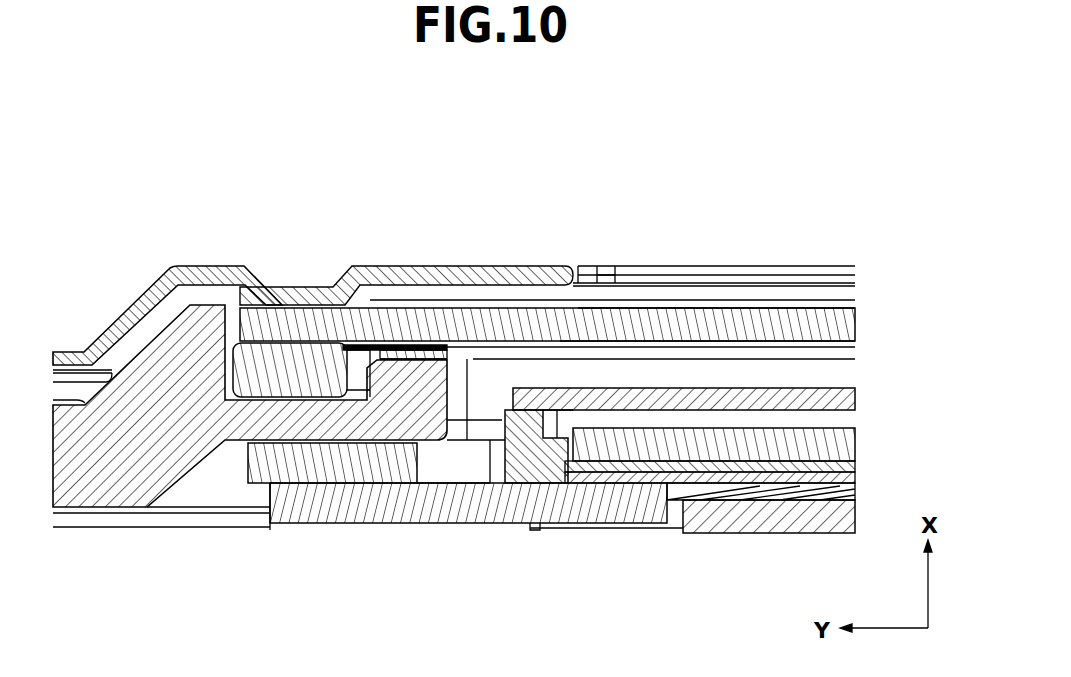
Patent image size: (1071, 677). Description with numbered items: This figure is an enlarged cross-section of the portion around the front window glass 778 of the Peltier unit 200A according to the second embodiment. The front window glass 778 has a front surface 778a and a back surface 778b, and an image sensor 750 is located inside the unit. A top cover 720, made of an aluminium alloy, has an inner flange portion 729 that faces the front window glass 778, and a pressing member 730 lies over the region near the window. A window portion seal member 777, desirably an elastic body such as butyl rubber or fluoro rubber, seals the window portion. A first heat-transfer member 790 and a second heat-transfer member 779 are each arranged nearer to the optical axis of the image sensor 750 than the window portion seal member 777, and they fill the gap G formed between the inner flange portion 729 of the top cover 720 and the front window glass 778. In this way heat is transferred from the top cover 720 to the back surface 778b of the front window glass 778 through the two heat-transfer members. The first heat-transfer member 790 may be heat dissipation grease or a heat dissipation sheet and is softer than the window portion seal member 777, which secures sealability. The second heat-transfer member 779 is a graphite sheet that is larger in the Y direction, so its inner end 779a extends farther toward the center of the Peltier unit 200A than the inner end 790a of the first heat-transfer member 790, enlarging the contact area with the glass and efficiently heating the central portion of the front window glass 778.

The top cover 720 is at (167, 367).
The pressing member 730 is at (217, 278).
The window portion seal member 777 is at (298, 297).
The first heat-transfer member 790 is at (422, 344).
The inner end of the first heat-transfer member 790a is at (445, 360).
The second heat-transfer member 779 is at (497, 345).
The inner end of the second heat-transfer member 779a is at (537, 346).
The front window glass 778 is at (650, 320).
The front surface 778a is at (830, 308).
The back surface 778b is at (818, 347).
The image sensor 750 is at (693, 433).
The inner flange portion 729 is at (405, 446).
The gap G is at (452, 355).
The Peltier unit 200A is at (775, 207).